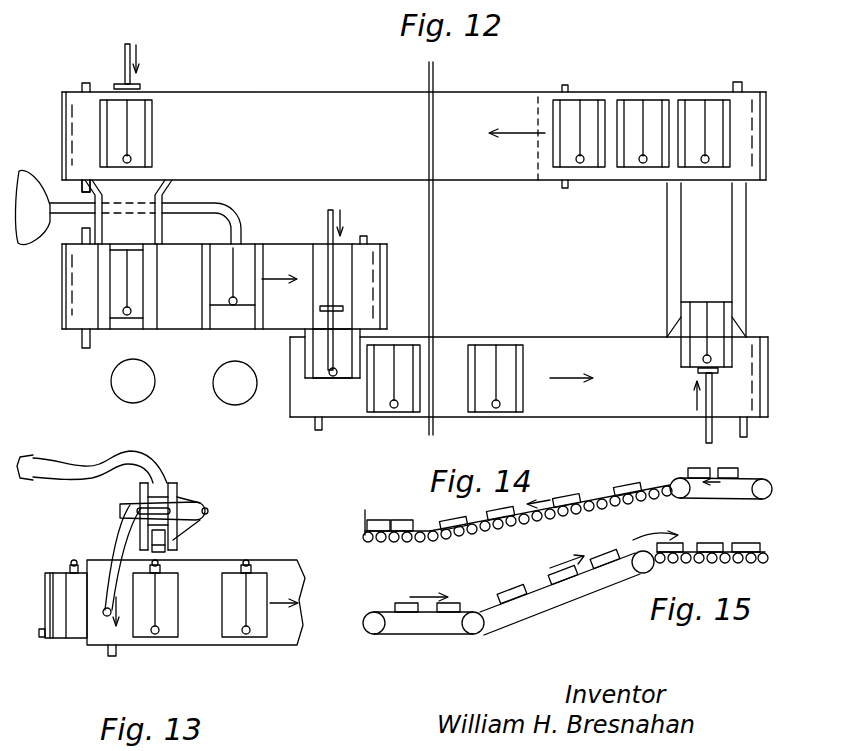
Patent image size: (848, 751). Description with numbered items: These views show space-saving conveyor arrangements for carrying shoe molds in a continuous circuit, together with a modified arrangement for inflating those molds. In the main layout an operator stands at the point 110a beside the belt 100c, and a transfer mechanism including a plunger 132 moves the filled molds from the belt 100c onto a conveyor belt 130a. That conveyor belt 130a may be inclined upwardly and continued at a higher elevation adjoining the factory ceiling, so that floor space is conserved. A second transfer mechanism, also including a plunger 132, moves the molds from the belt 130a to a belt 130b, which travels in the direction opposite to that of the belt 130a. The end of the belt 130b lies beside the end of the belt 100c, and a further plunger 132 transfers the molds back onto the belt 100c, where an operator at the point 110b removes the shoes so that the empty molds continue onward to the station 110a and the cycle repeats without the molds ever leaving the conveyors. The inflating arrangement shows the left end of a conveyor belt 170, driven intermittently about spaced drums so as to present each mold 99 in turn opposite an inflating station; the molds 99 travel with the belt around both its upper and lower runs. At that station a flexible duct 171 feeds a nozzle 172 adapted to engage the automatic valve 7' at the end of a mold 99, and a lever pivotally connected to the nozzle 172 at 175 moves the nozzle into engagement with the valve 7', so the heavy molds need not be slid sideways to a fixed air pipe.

In FIG. 12, the plunger 132 is at (124, 56).
In FIG. 12, the belt 100c is at (286, 216).
In FIG. 12, the belt 130b is at (490, 183).
In FIG. 14, the belt 130b is at (515, 516).
In FIG. 12, the conveyor belt 130a is at (592, 418).
In FIG. 15, the conveyor belt 130a is at (536, 608).
In FIG. 12, the point 110b is at (120, 381).
In FIG. 12, the point 110a is at (228, 392).
In FIG. 13, the flexible duct 171 is at (73, 463).
In FIG. 13, the lever pivot connection 175 is at (135, 510).
In FIG. 13, the valve 7' is at (166, 550).
In FIG. 13, the nozzle 172 is at (166, 549).
In FIG. 13, the mold 99 is at (78, 633).
In FIG. 13, the conveyor belt 170 is at (230, 646).